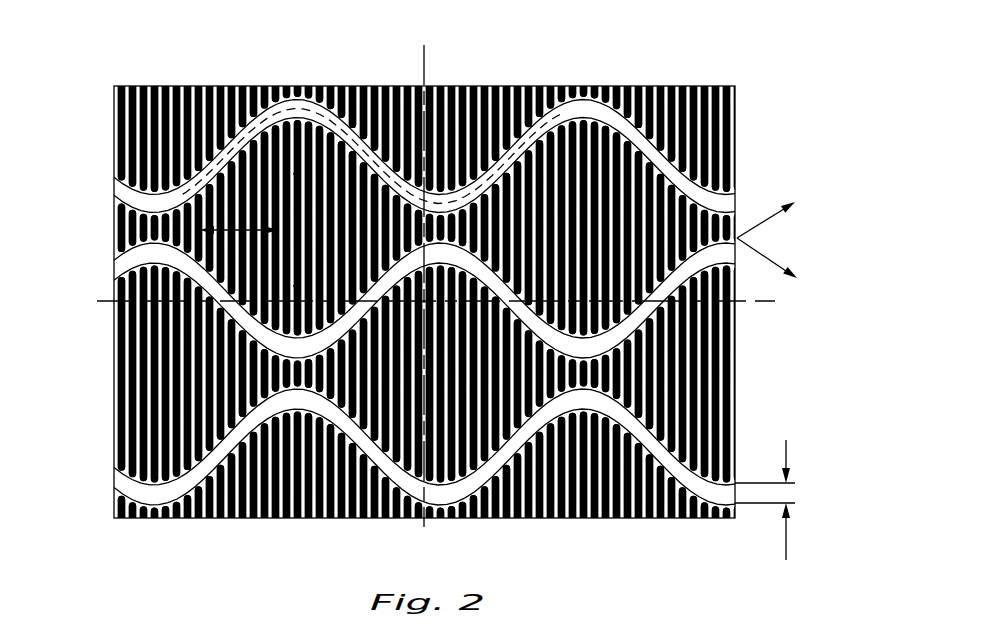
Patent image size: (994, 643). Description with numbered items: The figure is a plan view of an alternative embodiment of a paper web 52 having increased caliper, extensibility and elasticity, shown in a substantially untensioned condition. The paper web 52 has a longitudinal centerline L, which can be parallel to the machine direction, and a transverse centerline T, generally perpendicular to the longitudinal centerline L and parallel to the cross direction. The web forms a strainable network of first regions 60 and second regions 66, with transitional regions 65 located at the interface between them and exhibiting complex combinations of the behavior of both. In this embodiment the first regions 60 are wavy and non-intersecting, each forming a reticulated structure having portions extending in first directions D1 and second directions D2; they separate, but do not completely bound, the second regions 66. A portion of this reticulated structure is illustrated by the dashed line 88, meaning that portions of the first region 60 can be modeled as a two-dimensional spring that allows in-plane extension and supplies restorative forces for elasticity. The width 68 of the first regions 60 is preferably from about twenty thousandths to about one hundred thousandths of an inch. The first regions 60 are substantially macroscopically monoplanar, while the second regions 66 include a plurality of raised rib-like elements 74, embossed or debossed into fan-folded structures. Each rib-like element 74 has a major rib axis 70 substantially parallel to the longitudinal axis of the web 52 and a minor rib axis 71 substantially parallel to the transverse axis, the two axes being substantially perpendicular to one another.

The paper web 52 is at (788, 122).
The first regions 60 is at (389, 275).
The transitional regions 65 is at (424, 129).
The second regions 66 is at (495, 102).
The width of the first regions 68 is at (784, 506).
The major rib axis 70 is at (298, 232).
The minor rib axis 71 is at (237, 222).
The rib-like elements 74 is at (238, 452).
The dashed line 88 is at (233, 127).
The first directions D1 is at (760, 218).
The second directions D2 is at (767, 258).
The transverse centerline T is at (760, 302).
The longitudinal centerline L is at (426, 55).